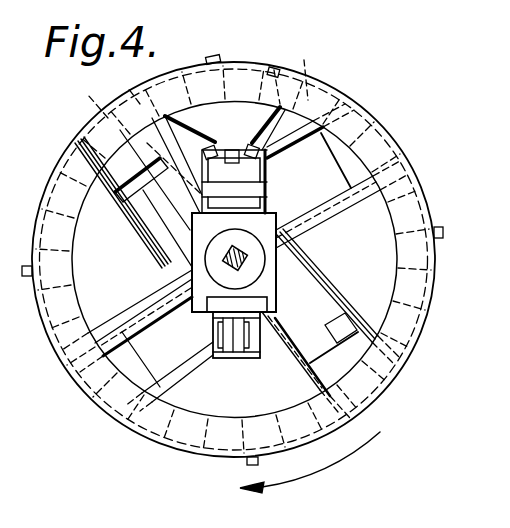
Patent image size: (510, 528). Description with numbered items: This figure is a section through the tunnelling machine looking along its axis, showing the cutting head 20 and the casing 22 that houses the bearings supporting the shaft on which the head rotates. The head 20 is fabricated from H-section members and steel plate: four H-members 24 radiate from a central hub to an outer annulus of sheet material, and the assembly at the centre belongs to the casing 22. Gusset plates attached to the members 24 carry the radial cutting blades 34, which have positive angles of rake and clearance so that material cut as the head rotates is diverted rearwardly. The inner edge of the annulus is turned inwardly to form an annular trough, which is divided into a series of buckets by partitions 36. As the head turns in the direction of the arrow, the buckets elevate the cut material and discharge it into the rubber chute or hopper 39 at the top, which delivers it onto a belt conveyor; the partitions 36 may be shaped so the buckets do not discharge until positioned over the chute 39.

The cutting head 20 is at (379, 117).
The casing 22 is at (277, 298).
The H-members 24 is at (182, 192).
The radial cutting blades 34 is at (116, 198).
The partitions 36 is at (290, 70).
The rubber chute or hopper 39 is at (240, 113).